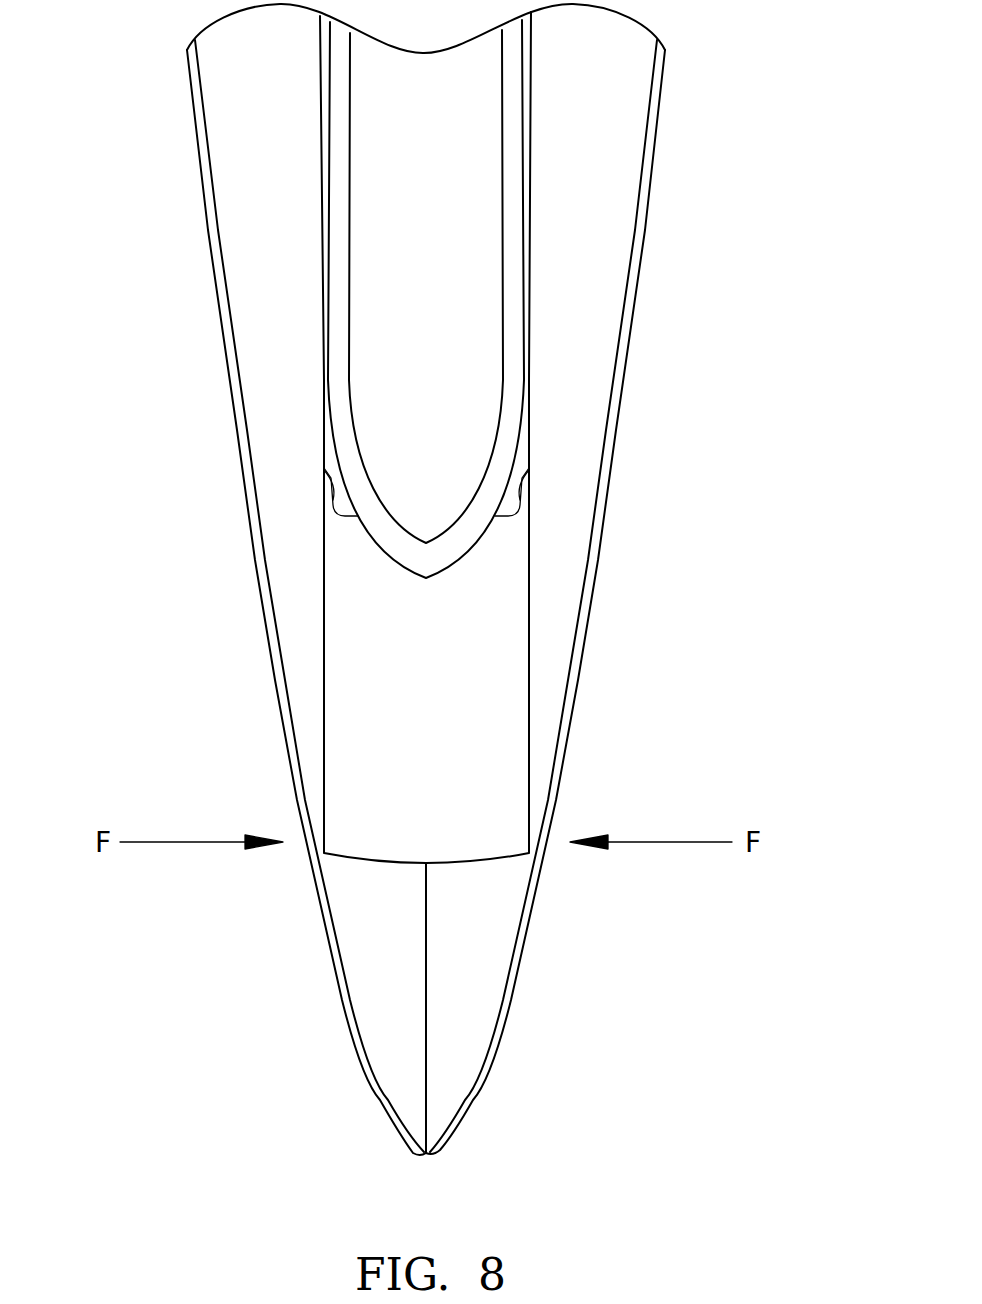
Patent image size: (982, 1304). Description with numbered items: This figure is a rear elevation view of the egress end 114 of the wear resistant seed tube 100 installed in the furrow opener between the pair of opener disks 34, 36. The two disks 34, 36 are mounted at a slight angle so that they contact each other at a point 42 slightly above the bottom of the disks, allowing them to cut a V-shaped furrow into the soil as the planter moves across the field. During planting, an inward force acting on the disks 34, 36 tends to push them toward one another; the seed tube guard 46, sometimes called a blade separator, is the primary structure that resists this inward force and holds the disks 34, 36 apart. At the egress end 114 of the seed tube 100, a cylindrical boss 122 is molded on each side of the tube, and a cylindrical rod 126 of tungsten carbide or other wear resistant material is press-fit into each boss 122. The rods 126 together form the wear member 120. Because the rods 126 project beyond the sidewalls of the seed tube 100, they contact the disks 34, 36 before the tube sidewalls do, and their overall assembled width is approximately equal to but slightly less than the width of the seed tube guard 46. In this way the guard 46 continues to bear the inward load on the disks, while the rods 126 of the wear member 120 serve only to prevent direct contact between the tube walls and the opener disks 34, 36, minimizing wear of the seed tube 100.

The disk 34 is at (292, 630).
The disk 36 is at (563, 607).
The contact point 42 is at (427, 977).
The seed tube guard 46 is at (395, 842).
The wear resistant seed tube 100 is at (365, 338).
The egress end 114 is at (440, 495).
The wear member 120 is at (308, 450).
The cylindrical boss 122 is at (334, 508).
The cylindrical rod 126 is at (325, 480).